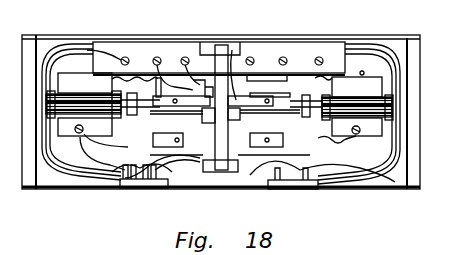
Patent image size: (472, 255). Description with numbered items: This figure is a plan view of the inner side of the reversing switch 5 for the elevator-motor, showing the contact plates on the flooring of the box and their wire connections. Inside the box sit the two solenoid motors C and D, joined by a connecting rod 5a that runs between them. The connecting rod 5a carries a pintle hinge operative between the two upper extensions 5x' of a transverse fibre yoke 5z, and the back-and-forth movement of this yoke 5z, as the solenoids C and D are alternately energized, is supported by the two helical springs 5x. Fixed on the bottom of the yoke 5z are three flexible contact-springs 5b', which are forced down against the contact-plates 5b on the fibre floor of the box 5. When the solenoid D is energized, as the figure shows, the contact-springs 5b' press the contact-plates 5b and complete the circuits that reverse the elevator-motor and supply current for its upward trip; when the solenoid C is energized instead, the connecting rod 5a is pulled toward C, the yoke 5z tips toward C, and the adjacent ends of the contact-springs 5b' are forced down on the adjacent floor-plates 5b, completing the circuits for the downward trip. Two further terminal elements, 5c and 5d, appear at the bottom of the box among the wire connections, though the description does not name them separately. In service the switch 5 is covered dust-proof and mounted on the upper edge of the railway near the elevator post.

The reversing switch 5 is at (419, 117).
The solenoid motor D is at (72, 79).
The solenoid motor C is at (355, 80).
The connecting rod 5a is at (178, 108).
The helical spring 5x is at (196, 118).
The upper extension of fibre yoke 5x' is at (255, 121).
The fibre yoke 5z is at (196, 80).
The flexible contact-spring 5b' is at (221, 116).
The contact-plate 5b is at (220, 117).
The left terminal block 5c is at (140, 192).
The right terminal block 5d is at (297, 192).